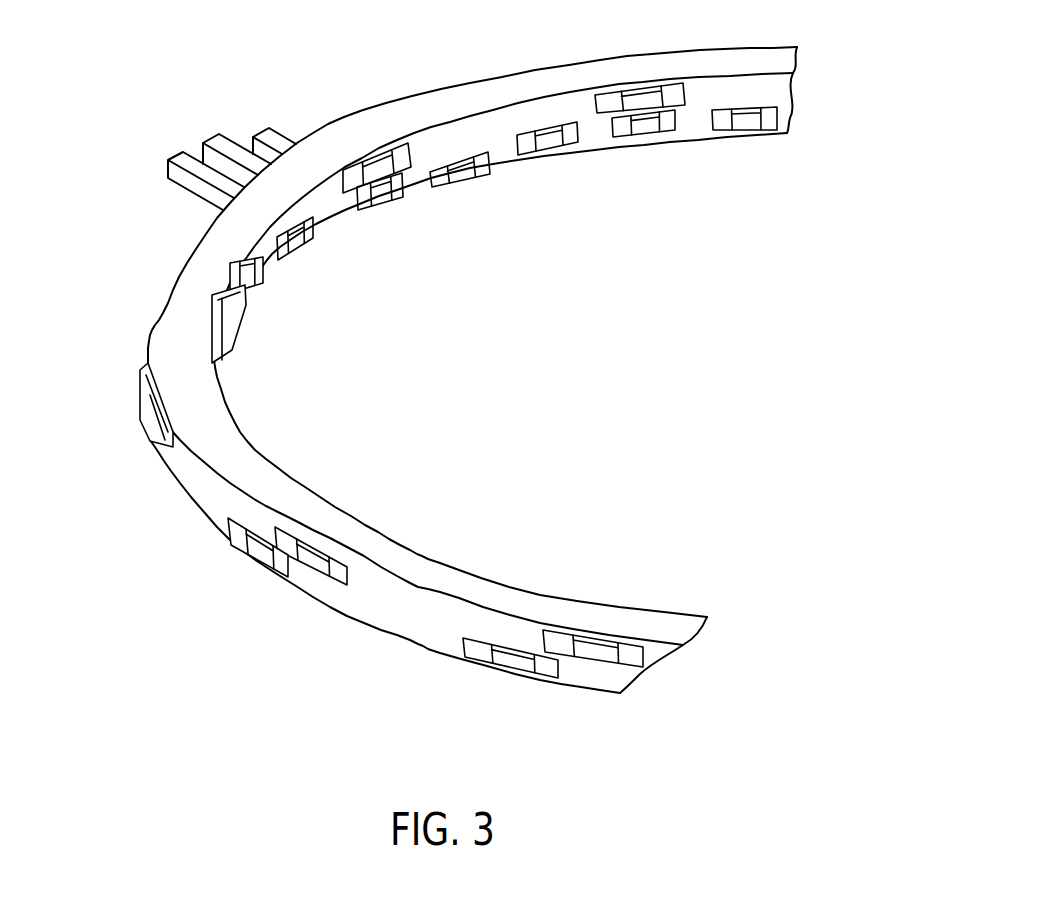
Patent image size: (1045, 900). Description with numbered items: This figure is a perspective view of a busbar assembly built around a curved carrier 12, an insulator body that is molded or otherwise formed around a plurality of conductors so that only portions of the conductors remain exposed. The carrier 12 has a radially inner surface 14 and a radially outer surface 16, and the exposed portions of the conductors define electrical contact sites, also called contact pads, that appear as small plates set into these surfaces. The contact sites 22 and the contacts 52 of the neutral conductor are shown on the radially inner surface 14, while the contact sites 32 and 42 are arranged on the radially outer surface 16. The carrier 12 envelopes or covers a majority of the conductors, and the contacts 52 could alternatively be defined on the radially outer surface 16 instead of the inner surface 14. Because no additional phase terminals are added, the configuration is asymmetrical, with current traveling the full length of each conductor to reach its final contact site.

The carrier 12 is at (132, 289).
The radially inner surface 14 is at (695, 113).
The radially outer surface 16 is at (195, 483).
The electrical contact site 22 is at (378, 172).
The electrical contact site 32 is at (587, 655).
The electrical contact site 42 is at (258, 558).
The neutral conductor contacts 52 is at (547, 148).